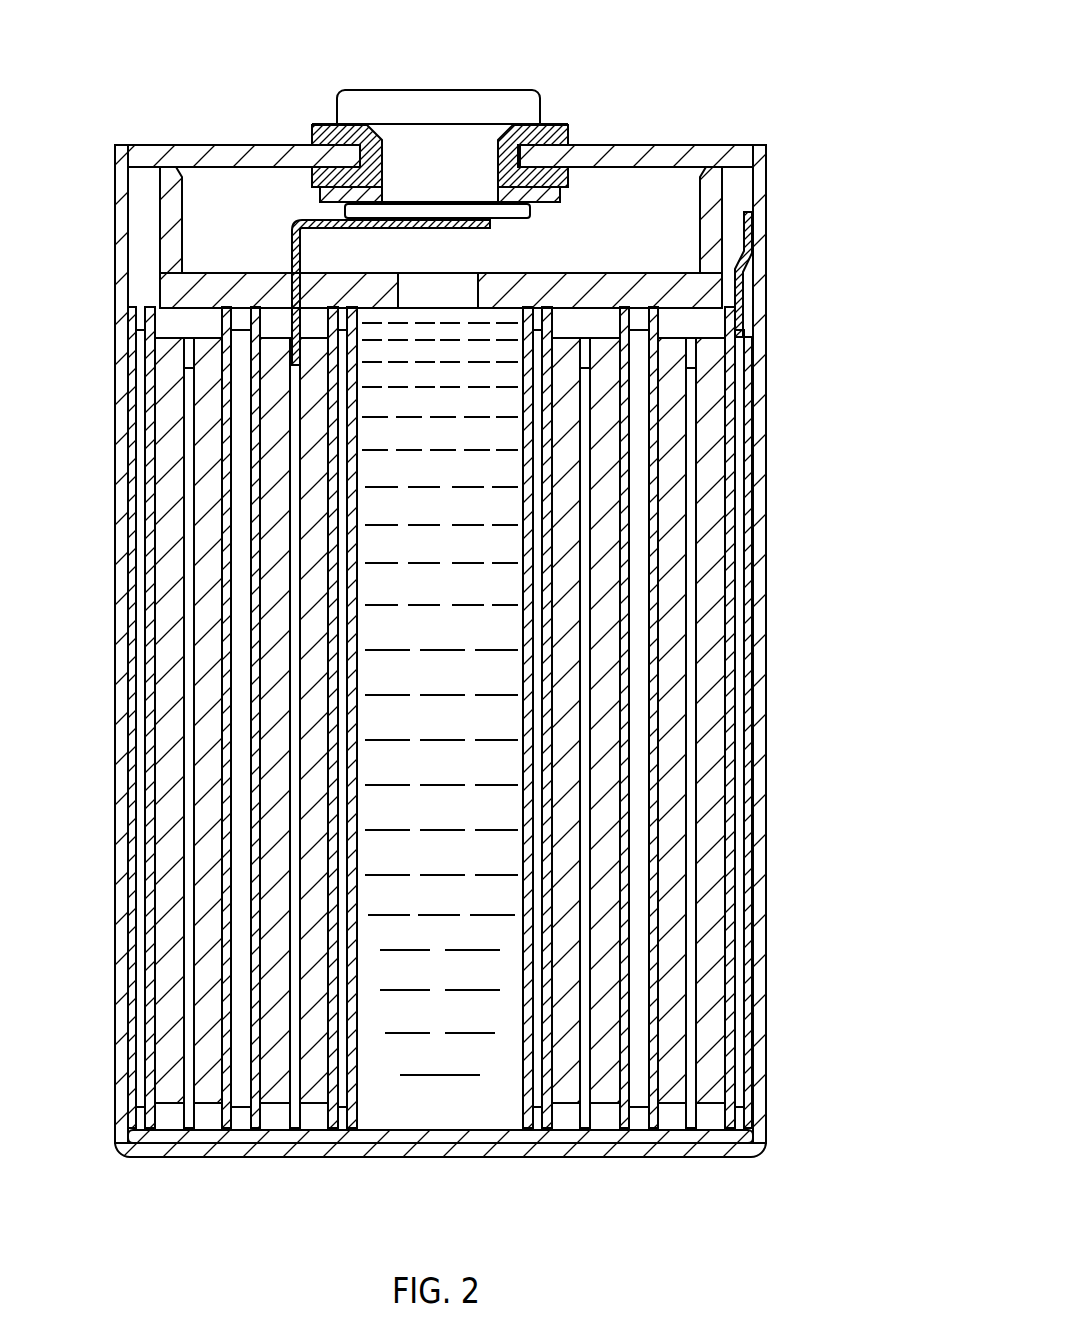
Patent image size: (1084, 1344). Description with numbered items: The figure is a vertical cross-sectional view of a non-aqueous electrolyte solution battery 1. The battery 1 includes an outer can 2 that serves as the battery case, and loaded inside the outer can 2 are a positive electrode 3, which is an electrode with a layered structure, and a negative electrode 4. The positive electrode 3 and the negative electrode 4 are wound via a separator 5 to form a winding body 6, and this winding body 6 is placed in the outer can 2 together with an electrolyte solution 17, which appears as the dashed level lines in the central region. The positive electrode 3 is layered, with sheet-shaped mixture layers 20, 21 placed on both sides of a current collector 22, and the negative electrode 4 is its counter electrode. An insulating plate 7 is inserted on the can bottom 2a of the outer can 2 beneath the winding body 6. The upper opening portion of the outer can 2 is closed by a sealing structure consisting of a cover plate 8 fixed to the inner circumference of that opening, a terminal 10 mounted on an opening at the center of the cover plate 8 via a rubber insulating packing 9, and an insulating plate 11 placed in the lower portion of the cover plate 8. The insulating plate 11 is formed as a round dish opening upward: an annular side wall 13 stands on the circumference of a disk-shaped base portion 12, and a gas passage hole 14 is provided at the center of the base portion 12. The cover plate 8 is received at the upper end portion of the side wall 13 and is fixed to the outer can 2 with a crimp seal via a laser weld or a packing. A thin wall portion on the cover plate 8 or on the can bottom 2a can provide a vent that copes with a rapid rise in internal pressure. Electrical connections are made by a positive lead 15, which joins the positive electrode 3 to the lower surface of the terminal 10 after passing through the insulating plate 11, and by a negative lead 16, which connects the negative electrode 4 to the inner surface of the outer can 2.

The battery 1 is at (703, 87).
The outer can 2 is at (470, 690).
The can bottom 2a is at (440, 1118).
The positive electrode 3 is at (486, 769).
The negative electrode 4 is at (735, 800).
The separator 5 is at (748, 880).
The winding body 6 is at (747, 1035).
The insulating plate 7 is at (606, 1135).
The cover plate 8 is at (612, 145).
The rubber insulating packing 9 is at (320, 124).
The terminal 10 is at (443, 100).
The insulating plate 11 is at (600, 283).
The base portion 12 is at (441, 237).
The side wall 13 is at (180, 232).
The gas passage hole 14 is at (470, 290).
The positive lead 15 is at (305, 228).
The negative lead 16 is at (733, 212).
The electrolyte solution 17 is at (384, 1100).
The mixture layer 20 is at (672, 482).
The mixture layer 21 is at (710, 595).
The current collector 22 is at (687, 522).